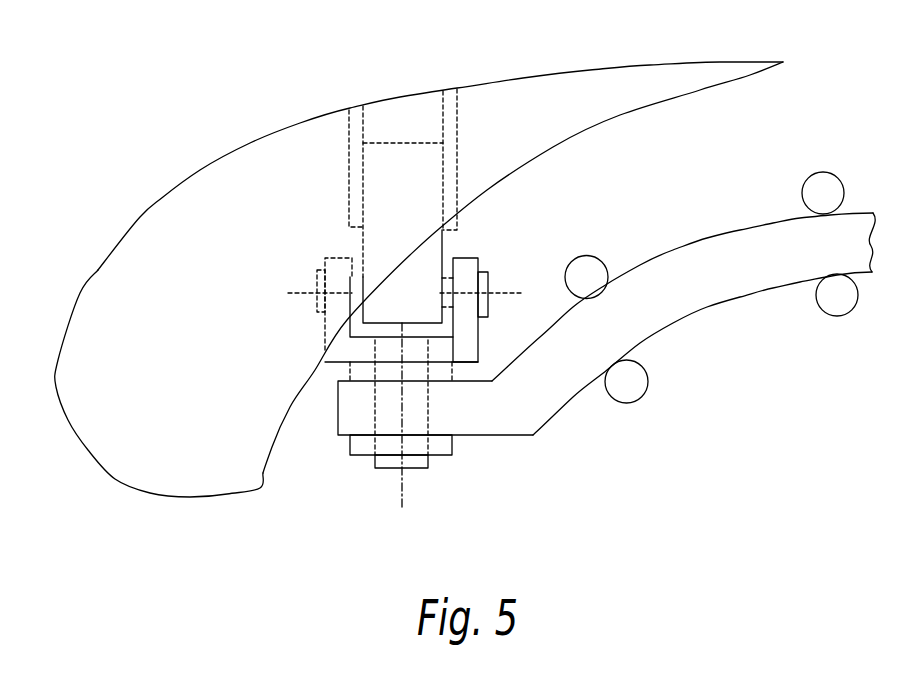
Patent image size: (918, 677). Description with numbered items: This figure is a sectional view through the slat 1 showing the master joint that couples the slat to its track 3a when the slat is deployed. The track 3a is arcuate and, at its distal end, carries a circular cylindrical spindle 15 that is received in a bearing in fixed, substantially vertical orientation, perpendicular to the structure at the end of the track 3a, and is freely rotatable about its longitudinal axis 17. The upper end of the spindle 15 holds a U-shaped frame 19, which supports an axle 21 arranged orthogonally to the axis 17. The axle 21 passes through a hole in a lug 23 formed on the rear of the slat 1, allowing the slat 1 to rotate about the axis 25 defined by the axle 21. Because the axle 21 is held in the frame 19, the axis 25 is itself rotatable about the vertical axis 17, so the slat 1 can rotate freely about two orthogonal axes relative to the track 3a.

The slat 1 is at (317, 138).
The track 3a is at (818, 250).
The spindle 15 is at (380, 450).
The longitudinal axis 17 is at (400, 482).
The U-shaped frame 19 is at (340, 350).
The axle 21 is at (487, 270).
The lug 23 is at (422, 305).
The axis 25 is at (505, 293).